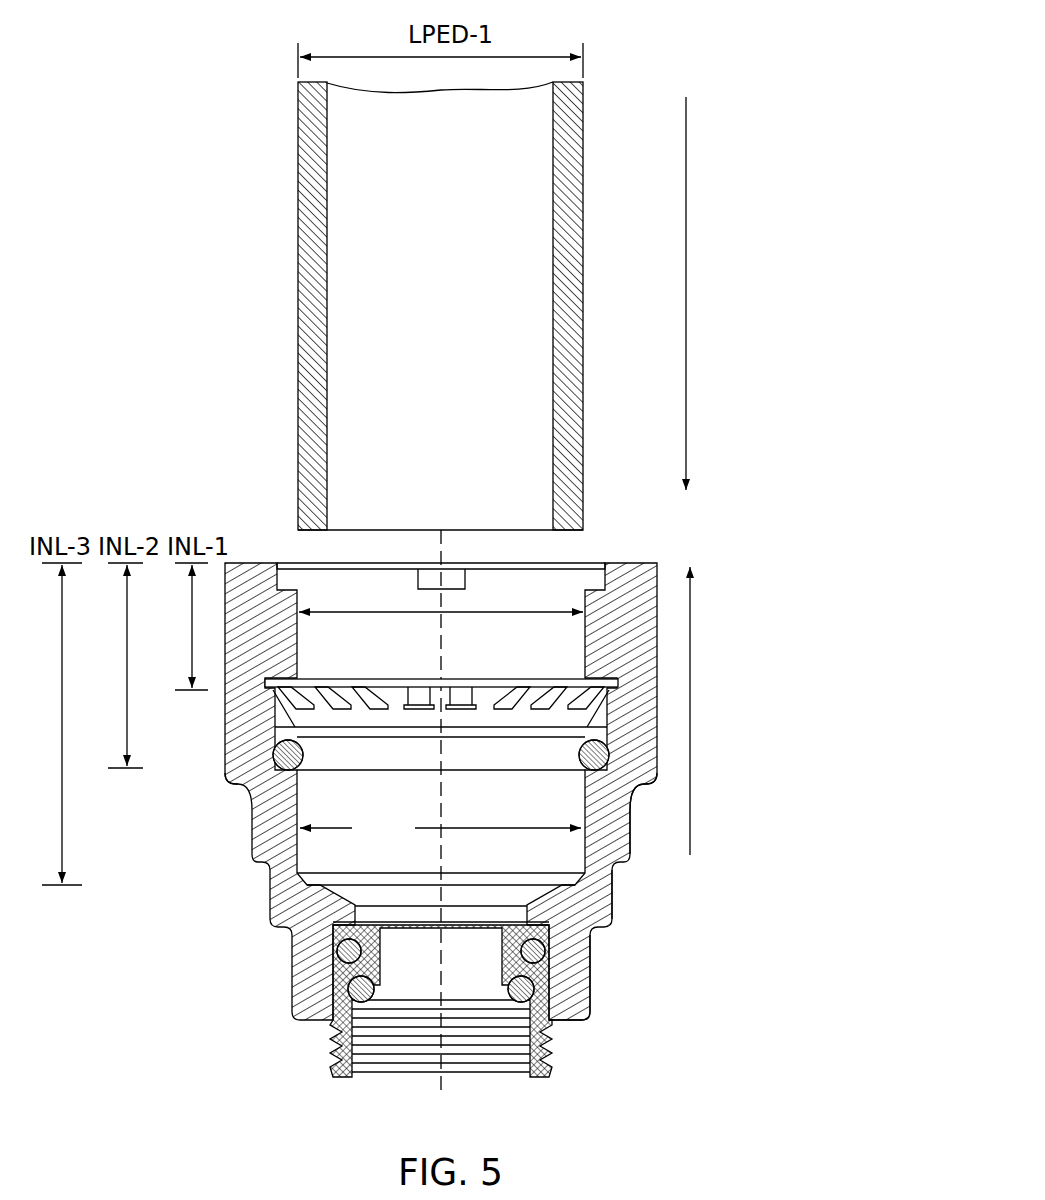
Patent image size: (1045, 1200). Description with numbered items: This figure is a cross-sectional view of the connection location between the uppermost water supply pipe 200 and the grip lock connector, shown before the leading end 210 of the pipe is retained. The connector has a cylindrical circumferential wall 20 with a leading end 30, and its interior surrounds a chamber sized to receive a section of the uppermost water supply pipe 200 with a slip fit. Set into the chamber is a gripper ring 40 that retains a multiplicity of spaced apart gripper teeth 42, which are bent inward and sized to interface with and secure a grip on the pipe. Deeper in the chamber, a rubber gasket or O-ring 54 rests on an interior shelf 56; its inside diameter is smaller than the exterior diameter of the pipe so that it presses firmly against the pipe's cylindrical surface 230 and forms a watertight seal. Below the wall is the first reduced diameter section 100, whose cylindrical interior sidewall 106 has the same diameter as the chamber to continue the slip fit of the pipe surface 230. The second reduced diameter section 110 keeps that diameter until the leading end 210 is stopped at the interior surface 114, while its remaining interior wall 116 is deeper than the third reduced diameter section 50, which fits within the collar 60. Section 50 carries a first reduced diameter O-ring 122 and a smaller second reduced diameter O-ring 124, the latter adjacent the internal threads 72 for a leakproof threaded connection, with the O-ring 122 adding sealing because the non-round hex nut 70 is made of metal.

The cylindrical circumferential wall 20 is at (720, 610).
The leading end 30 is at (250, 562).
The gripper ring 40 is at (515, 679).
The gripper teeth 42 is at (275, 722).
The third reduced diameter section 50 is at (592, 962).
The O-ring 54 is at (608, 757).
The interior shelf 56 is at (237, 783).
The collar 60 is at (592, 995).
The non-round hex nut 70 is at (481, 1031).
The internal threads 72 is at (505, 1070).
The first reduced diameter section 100 is at (632, 855).
The interior sidewall 106 is at (441, 842).
The second reduced diameter section 110 is at (613, 892).
The interior surface 114 is at (307, 887).
The interior wall 116 is at (567, 922).
The first reduced diameter O-ring 122 is at (337, 960).
The second reduced diameter O-ring 124 is at (333, 1012).
The uppermost water supply pipe 200 is at (722, 158).
The leading end 210 is at (568, 530).
The cylindrical surface 230 is at (583, 318).